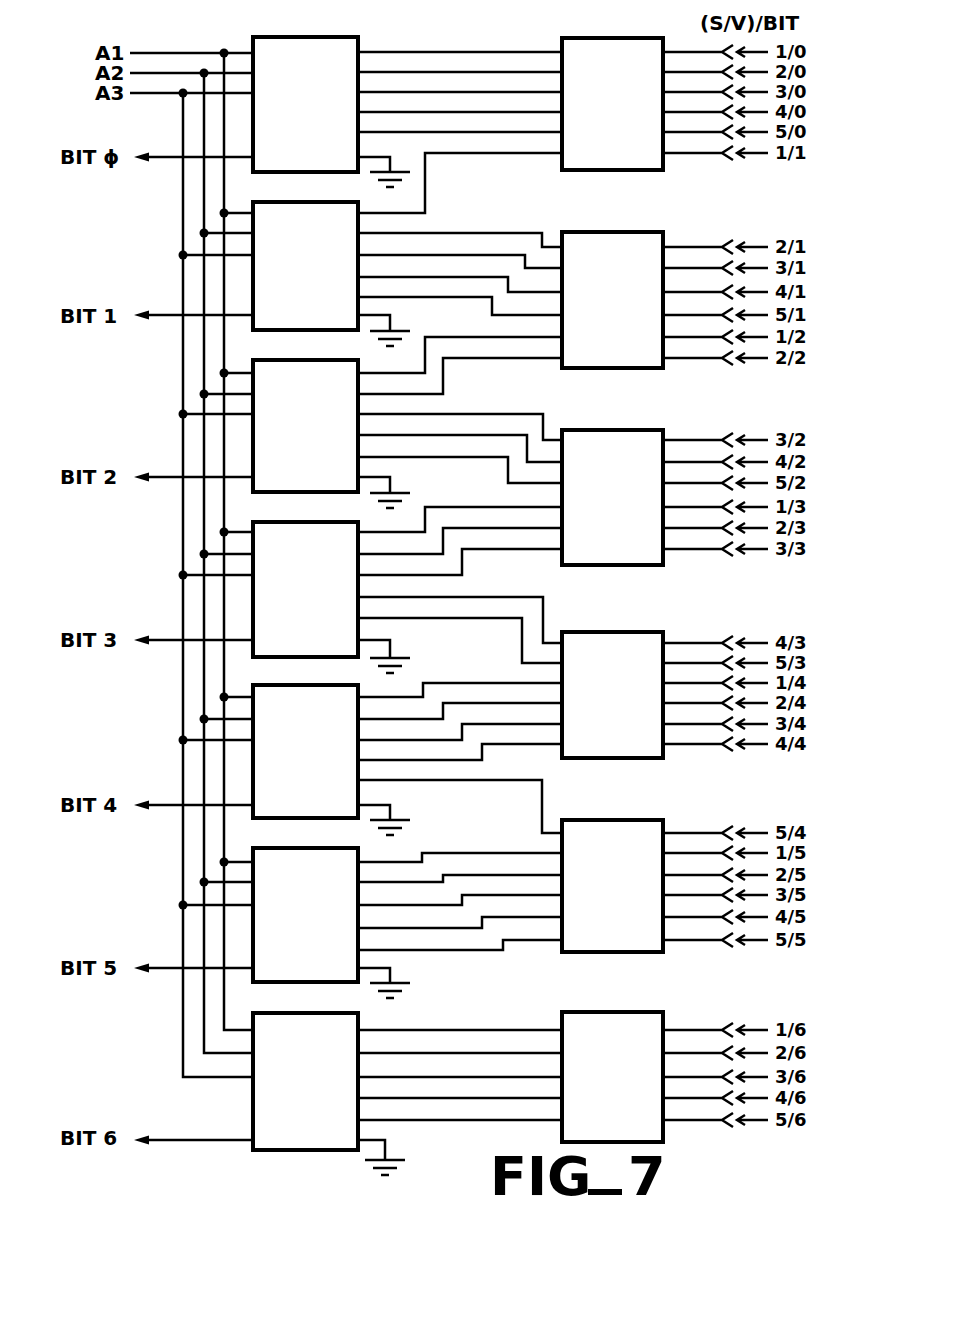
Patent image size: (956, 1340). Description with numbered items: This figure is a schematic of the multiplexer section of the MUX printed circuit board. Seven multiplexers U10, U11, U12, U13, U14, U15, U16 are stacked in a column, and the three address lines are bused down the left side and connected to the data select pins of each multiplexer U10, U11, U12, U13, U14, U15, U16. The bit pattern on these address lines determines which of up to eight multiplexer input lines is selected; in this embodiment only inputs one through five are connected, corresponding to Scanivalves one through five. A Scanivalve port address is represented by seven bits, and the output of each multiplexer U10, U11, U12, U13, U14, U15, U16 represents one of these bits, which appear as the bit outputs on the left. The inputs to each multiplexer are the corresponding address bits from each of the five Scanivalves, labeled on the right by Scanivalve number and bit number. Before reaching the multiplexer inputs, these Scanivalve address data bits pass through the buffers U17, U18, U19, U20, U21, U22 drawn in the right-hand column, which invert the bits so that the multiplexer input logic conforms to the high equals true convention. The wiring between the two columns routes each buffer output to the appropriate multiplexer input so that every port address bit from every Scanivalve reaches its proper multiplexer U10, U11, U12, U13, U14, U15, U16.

The multiplexer U10 is at (305, 104).
The multiplexer U11 is at (305, 266).
The multiplexer U12 is at (305, 426).
The multiplexer U13 is at (305, 589).
The multiplexer U14 is at (305, 751).
The multiplexer U15 is at (305, 915).
The multiplexer U16 is at (305, 1081).
The buffer U17 is at (612, 104).
The buffer U18 is at (612, 300).
The buffer U19 is at (612, 497).
The buffer U20 is at (612, 695).
The buffer U21 is at (612, 886).
The buffer U22 is at (612, 1077).